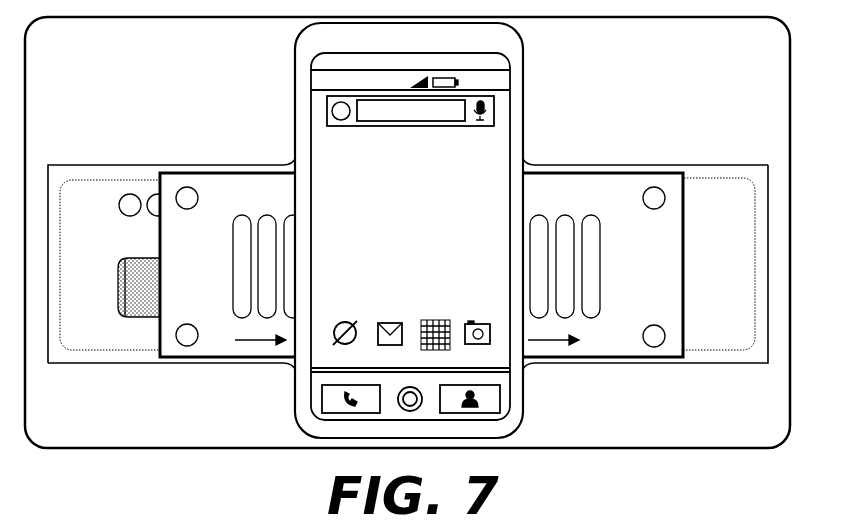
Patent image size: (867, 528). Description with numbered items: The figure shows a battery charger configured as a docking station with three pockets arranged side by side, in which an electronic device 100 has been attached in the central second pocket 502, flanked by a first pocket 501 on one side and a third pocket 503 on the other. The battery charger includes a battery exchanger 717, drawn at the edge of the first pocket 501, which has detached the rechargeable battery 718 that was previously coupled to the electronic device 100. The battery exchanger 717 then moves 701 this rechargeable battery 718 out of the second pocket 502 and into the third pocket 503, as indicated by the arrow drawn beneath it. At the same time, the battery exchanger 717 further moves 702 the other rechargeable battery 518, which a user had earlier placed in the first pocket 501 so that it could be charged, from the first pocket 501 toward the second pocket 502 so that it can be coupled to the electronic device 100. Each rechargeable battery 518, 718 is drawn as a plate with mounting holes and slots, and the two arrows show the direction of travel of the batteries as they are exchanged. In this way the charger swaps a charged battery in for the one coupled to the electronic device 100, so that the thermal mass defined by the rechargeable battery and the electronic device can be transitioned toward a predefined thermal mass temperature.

The electronic device 100 is at (416, 230).
The first pocket 501 is at (138, 165).
The second pocket 502 is at (529, 112).
The third pocket 503 is at (720, 168).
The rechargeable battery 518 is at (250, 195).
The rechargeable battery 718 is at (573, 192).
The battery exchanger 717 is at (118, 283).
The movement of rechargeable battery 701 is at (553, 345).
The movement of rechargeable battery 702 is at (262, 343).